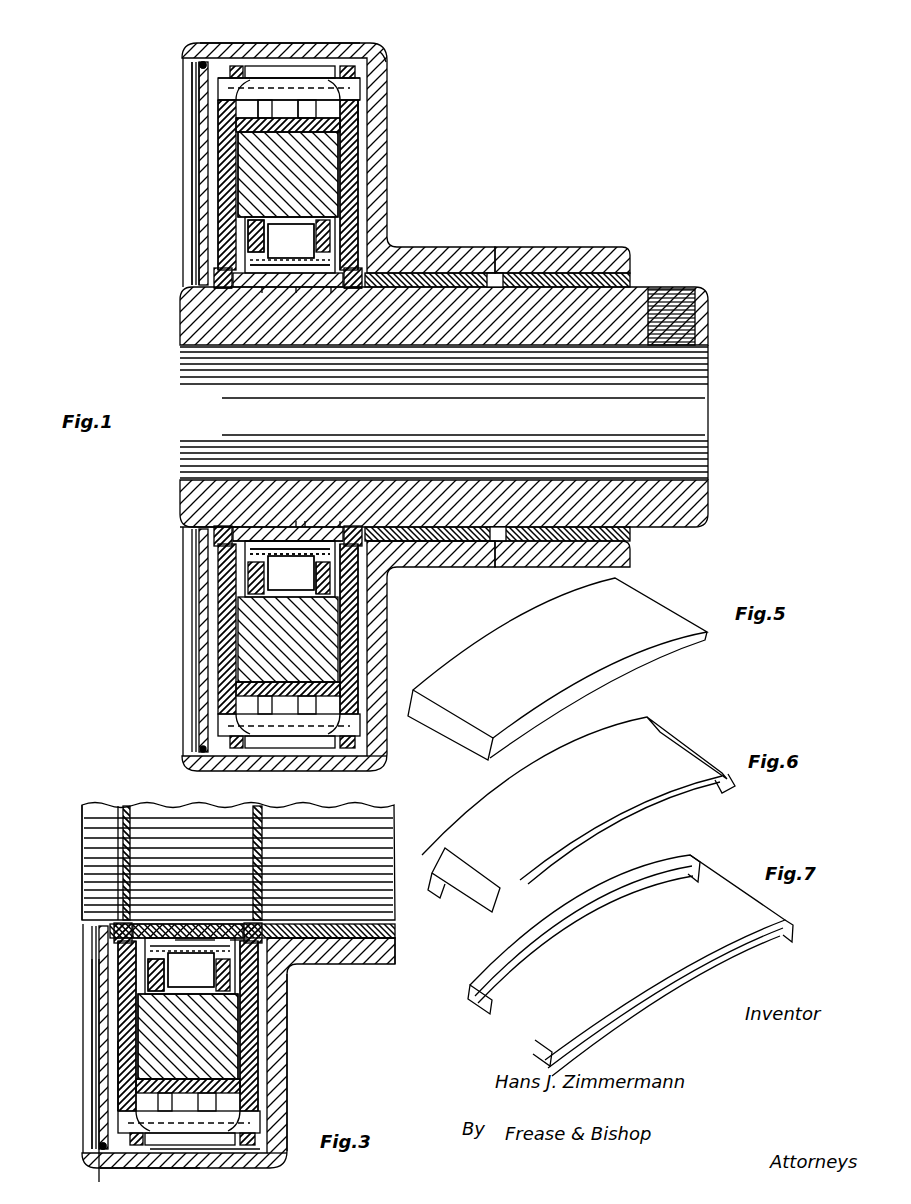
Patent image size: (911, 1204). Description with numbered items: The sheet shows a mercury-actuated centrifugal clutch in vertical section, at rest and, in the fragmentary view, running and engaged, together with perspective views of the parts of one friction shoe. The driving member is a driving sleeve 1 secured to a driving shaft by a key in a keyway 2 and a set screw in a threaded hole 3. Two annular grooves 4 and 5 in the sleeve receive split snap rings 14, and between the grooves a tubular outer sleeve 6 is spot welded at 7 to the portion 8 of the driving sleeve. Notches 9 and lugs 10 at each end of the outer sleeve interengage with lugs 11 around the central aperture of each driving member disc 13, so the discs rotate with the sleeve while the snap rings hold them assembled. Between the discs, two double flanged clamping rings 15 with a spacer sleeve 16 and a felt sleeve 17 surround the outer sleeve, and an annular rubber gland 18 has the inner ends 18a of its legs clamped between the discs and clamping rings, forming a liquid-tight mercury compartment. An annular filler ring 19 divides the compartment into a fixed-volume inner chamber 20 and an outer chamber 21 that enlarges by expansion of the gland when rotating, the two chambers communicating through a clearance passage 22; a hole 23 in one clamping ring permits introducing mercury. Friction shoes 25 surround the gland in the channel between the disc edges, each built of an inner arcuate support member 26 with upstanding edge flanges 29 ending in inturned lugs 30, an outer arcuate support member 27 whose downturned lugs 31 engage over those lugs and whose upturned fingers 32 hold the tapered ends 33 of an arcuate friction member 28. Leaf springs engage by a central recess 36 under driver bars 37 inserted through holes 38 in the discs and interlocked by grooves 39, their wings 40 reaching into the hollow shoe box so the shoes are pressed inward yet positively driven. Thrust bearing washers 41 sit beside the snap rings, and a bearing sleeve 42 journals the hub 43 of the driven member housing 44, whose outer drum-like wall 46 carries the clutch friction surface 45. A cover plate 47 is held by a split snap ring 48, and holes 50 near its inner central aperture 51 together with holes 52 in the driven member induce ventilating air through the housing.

In FIG. 1, the driving sleeve 1 is at (705, 505).
In FIG. 3, the driving sleeve 1 is at (386, 822).
In FIG. 1, the keyway 2 is at (690, 462).
In FIG. 1, the threaded hole 3 is at (695, 327).
In FIG. 1, the annular groove 4 is at (222, 298).
In FIG. 3, the annular groove 4 is at (106, 818).
In FIG. 1, the annular groove 5 is at (356, 290).
In FIG. 3, the annular groove 5 is at (259, 814).
In FIG. 1, the tubular outer sleeve 6 is at (302, 522).
In FIG. 3, the tubular outer sleeve 6 is at (185, 938).
In FIG. 1, the spot weld 7 is at (262, 293).
In FIG. 3, the spot weld 7 is at (200, 958).
In FIG. 1, the portion of driving sleeve 8 is at (296, 293).
In FIG. 3, the portion of driving sleeve 8 is at (188, 816).
In FIG. 1, the notch 9 is at (331, 293).
In FIG. 3, the notch 9 is at (126, 914).
In FIG. 3, the lug 10 is at (245, 908).
In FIG. 1, the lug 11 is at (225, 530).
In FIG. 1, the driving member disc 13 is at (345, 162).
In FIG. 3, the driving member disc 13 is at (162, 1012).
In FIG. 1, the split snap ring 14 is at (386, 250).
In FIG. 3, the split snap ring 14 is at (130, 948).
In FIG. 1, the double flanged clamping ring 15 is at (386, 208).
In FIG. 3, the double flanged clamping ring 15 is at (132, 1000).
In FIG. 1, the spacer sleeve 16 is at (291, 241).
In FIG. 3, the spacer sleeve 16 is at (184, 975).
In FIG. 1, the felt sleeve 17 is at (252, 262).
In FIG. 1, the annular rubber gland 18 is at (365, 128).
In FIG. 3, the annular rubber gland 18 is at (257, 1042).
In FIG. 1, the inner ends of gland legs 18a is at (222, 630).
In FIG. 3, the inner ends of gland legs 18a is at (130, 974).
In FIG. 1, the annular filler ring 19 is at (262, 172).
In FIG. 3, the annular filler ring 19 is at (122, 1072).
In FIG. 1, the inner chamber 20 is at (265, 580).
In FIG. 3, the inner chamber 20 is at (188, 970).
In FIG. 1, the outer chamber 21 is at (375, 667).
In FIG. 3, the outer chamber 21 is at (262, 1062).
In FIG. 1, the clearance passage 22 is at (240, 667).
In FIG. 3, the clearance passage 22 is at (292, 1002).
In FIG. 1, the hole 23 is at (266, 233).
In FIG. 1, the friction shoe 25 is at (282, 718).
In FIG. 1, the inner arcuate support member 26 is at (360, 112).
In FIG. 7, the inner arcuate support member 26 is at (712, 945).
In FIG. 1, the outer arcuate support member 27 is at (412, 760).
In FIG. 6, the outer arcuate support member 27 is at (604, 818).
In FIG. 3, the arcuate friction member 28 is at (262, 1132).
In FIG. 5, the arcuate friction member 28 is at (600, 672).
In FIG. 1, the upstanding edge flange 29 is at (232, 706).
In FIG. 7, the upstanding edge flange 29 is at (553, 927).
In FIG. 7, the inturned lug 30 is at (705, 862).
In FIG. 1, the downturned lug 31 is at (325, 725).
In FIG. 6, the downturned lug 31 is at (728, 787).
In FIG. 1, the upturned finger 32 is at (270, 748).
In FIG. 6, the upturned finger 32 is at (683, 740).
In FIG. 5, the tapered end 33 is at (660, 608).
In FIG. 1, the central recess 36 is at (350, 137).
In FIG. 1, the driver bar 37 is at (222, 92).
In FIG. 1, the hole 38 is at (240, 100).
In FIG. 1, the groove 39 is at (318, 97).
In FIG. 1, the spring wing 40 is at (253, 97).
In FIG. 1, the thrust bearing washer 41 is at (230, 553).
In FIG. 3, the thrust bearing washer 41 is at (296, 952).
In FIG. 1, the bearing sleeve 42 is at (577, 280).
In FIG. 3, the bearing sleeve 42 is at (378, 938).
In FIG. 1, the hub 43 is at (440, 264).
In FIG. 3, the hub 43 is at (380, 944).
In FIG. 1, the driven member housing 44 is at (390, 92).
In FIG. 3, the driven member housing 44 is at (287, 1072).
In FIG. 1, the clutch friction surface 45 is at (285, 45).
In FIG. 3, the clutch friction surface 45 is at (142, 1142).
In FIG. 1, the outer drum-like wall 46 is at (332, 60).
In FIG. 1, the cover plate 47 is at (196, 142).
In FIG. 3, the cover plate 47 is at (122, 1096).
In FIG. 1, the split snap ring 48 is at (198, 65).
In FIG. 3, the split snap ring 48 is at (106, 1152).
In FIG. 1, the hole 50 is at (215, 226).
In FIG. 3, the hole 50 is at (120, 982).
In FIG. 1, the inner central aperture 51 is at (240, 545).
In FIG. 1, the hole 52 is at (398, 68).
In FIG. 3, the hole 52 is at (282, 1137).